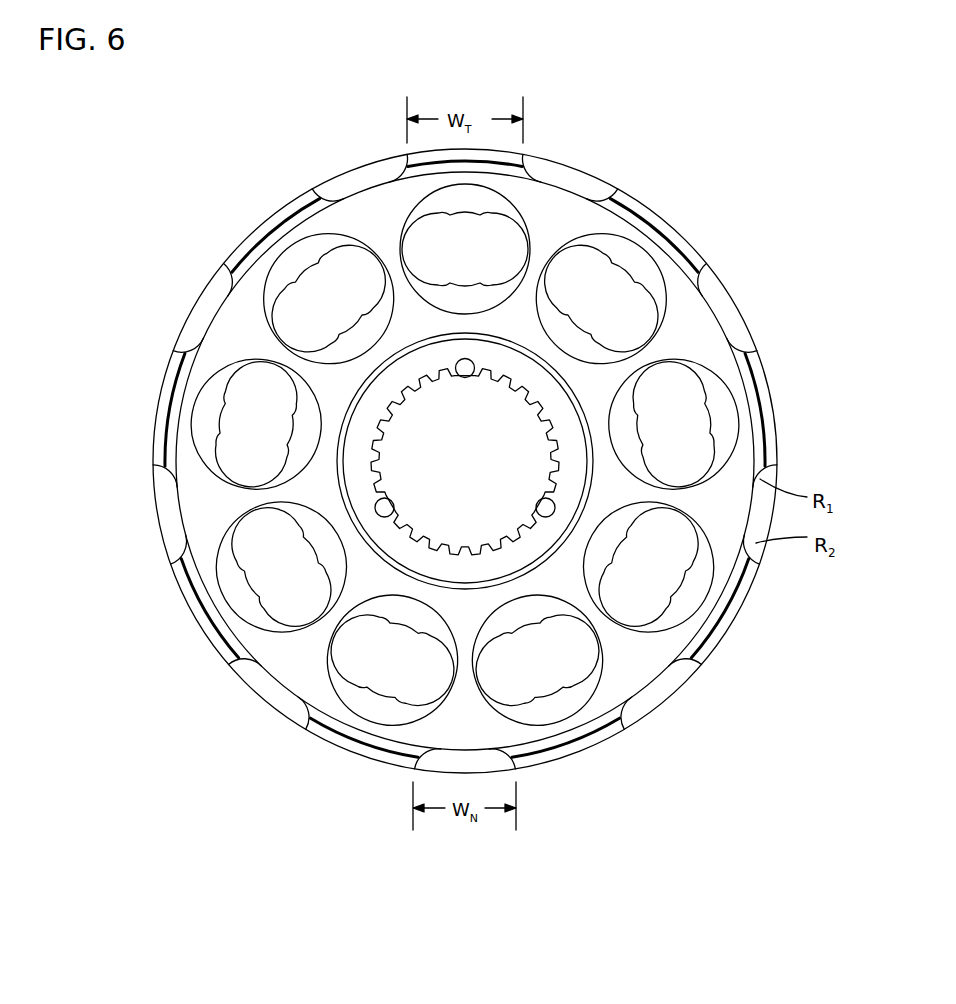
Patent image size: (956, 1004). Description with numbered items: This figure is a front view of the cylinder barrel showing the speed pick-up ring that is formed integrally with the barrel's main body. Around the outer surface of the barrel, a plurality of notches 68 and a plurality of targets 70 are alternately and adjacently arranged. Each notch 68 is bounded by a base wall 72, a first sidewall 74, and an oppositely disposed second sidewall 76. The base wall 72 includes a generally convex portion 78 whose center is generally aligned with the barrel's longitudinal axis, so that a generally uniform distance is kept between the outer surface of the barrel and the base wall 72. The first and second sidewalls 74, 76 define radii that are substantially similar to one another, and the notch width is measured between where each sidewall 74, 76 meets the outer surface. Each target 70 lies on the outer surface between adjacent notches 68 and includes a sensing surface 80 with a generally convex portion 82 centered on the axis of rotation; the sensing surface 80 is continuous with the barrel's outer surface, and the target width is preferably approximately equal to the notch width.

The notches 68 is at (725, 312).
The targets 70 is at (495, 447).
The base wall 72 is at (712, 305).
The first sidewall 74 is at (772, 472).
The second sidewall 76 is at (756, 552).
The convex portion 78 is at (723, 327).
The sensing surface 80 is at (680, 228).
The convex portion 82 is at (647, 207).